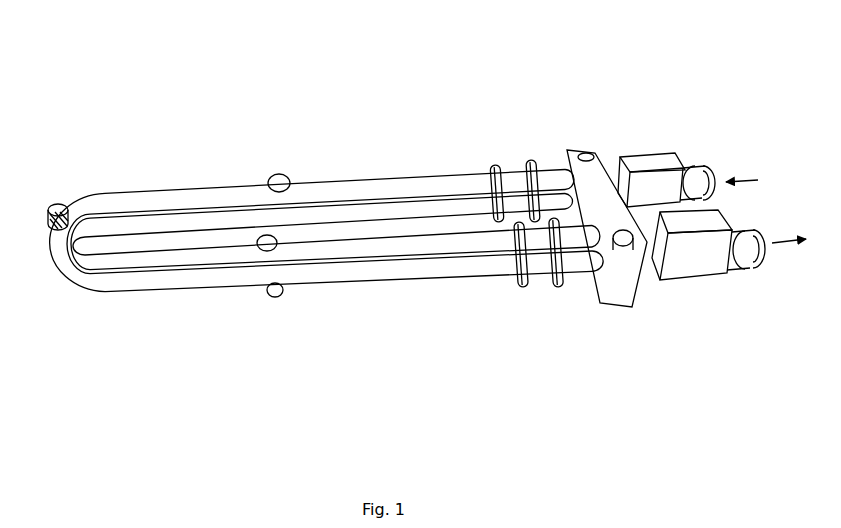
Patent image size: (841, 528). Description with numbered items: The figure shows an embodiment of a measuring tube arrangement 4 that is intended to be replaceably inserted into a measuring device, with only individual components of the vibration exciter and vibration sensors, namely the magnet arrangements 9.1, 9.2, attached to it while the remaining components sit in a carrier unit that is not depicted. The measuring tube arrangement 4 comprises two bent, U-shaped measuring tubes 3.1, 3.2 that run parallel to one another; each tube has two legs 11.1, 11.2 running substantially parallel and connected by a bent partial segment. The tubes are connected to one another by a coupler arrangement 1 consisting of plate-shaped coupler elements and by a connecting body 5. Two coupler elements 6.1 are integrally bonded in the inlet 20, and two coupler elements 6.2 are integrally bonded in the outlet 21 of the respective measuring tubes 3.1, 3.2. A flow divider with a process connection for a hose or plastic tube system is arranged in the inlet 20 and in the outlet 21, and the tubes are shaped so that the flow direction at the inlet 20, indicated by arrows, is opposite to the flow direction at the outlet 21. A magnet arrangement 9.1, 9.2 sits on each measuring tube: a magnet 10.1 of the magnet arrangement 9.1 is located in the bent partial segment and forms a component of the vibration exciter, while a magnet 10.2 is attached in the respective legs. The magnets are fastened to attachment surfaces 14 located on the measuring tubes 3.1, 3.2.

The coupler arrangement 1 is at (530, 145).
The measuring tube 3.1 is at (442, 190).
The measuring tube 3.2 is at (468, 270).
The measuring tube arrangement 4 is at (152, 153).
The connecting body 5 is at (625, 275).
The coupler element 6.1 is at (547, 147).
The coupler element 6.2 is at (553, 290).
The magnet arrangement 9.1 is at (287, 147).
The magnet arrangement 9.2 is at (247, 303).
The magnet 10.1 is at (62, 203).
The magnet 10.2 is at (278, 173).
The leg 11.1 is at (352, 190).
The leg 11.2 is at (338, 247).
The attachment surface 14 is at (272, 256).
The inlet 20 is at (608, 147).
The outlet 21 is at (648, 283).